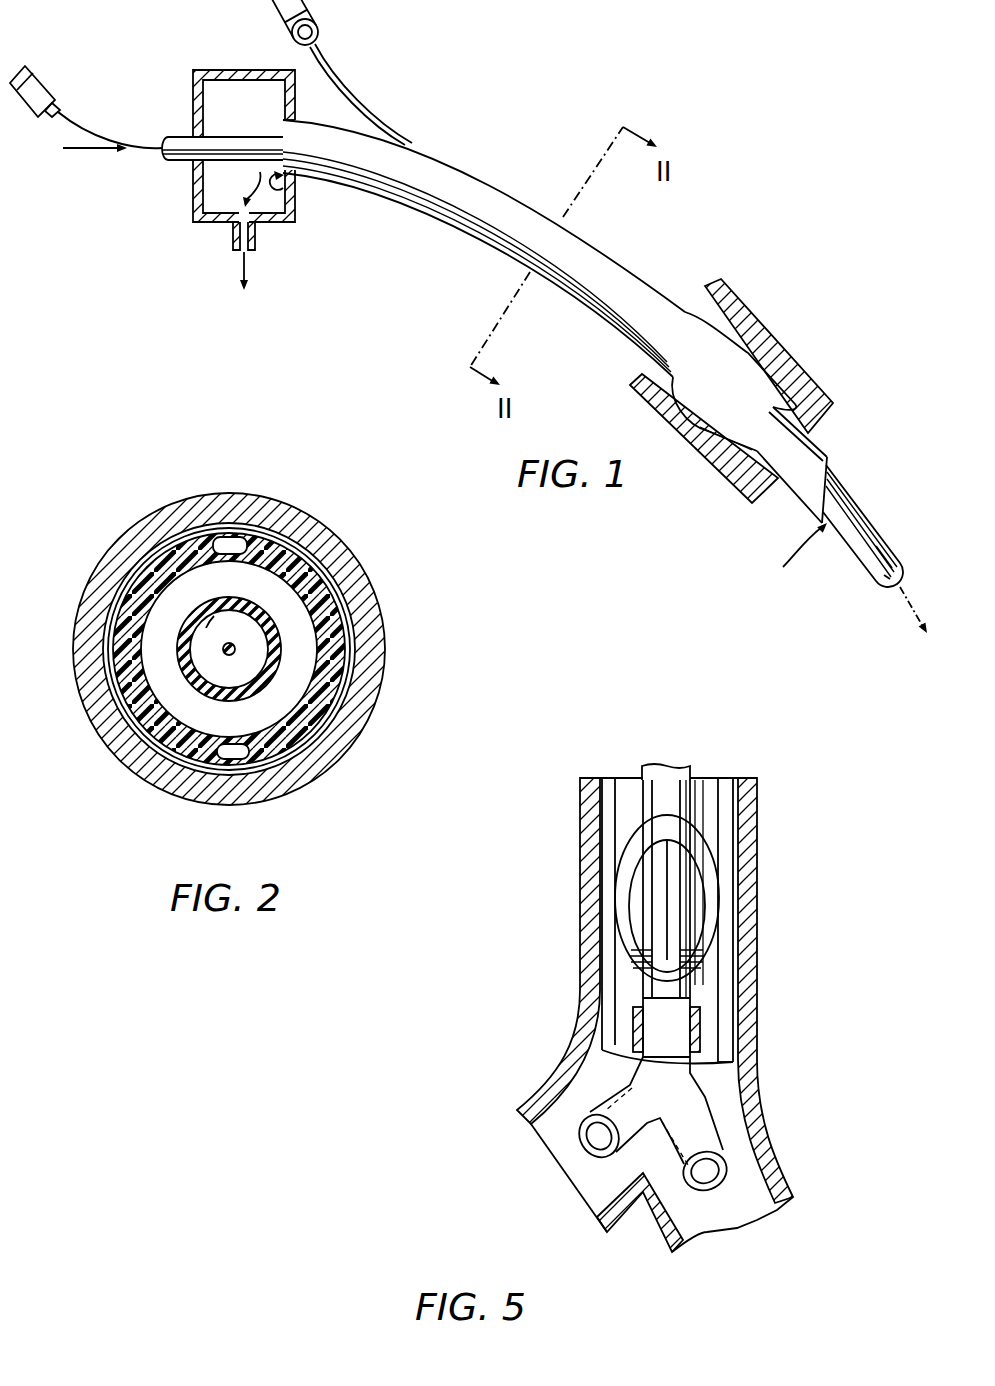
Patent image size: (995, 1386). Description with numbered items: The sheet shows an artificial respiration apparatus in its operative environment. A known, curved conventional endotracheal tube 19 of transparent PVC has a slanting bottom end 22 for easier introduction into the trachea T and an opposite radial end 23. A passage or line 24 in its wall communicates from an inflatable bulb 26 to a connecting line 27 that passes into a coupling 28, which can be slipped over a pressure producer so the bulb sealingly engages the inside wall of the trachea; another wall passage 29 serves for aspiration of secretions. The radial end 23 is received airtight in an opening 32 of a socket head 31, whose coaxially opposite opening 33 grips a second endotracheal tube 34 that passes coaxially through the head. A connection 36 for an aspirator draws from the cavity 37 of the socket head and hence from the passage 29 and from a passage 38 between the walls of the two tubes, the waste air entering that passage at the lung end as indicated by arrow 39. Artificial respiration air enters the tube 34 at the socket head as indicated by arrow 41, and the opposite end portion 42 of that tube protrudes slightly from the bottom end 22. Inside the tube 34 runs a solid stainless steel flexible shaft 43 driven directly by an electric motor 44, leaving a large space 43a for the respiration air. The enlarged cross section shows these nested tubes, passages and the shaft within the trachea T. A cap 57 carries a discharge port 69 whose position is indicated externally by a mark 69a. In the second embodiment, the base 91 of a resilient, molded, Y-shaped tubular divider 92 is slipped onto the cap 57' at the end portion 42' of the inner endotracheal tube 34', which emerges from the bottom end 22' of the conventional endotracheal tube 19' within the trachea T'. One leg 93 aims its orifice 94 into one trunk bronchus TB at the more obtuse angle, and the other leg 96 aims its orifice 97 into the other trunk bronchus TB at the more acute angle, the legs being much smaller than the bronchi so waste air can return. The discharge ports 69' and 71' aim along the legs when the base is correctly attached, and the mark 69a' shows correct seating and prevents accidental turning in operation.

In FIG. 1, the conventional endotracheal tube 19 is at (555, 317).
In FIG. 2, the conventional endotracheal tube 19 is at (253, 636).
In FIG. 1, the slanting bottom end 22 is at (863, 525).
In FIG. 1, the radial end 23 is at (280, 125).
In FIG. 2, the passage or line 24 is at (222, 538).
In FIG. 1, the inflatable bulb 26 is at (693, 380).
In FIG. 2, the inflatable bulb 26 is at (350, 647).
In FIG. 1, the connecting line 27 is at (342, 92).
In FIG. 1, the coupling 28 is at (313, 18).
In FIG. 1, the passage or line 29 is at (285, 195).
In FIG. 2, the passage or line 29 is at (217, 759).
In FIG. 1, the socket head 31 is at (238, 70).
In FIG. 1, the opening 32 is at (293, 124).
In FIG. 1, the opening 33 is at (193, 167).
In FIG. 1, the endotracheal tube 34 is at (216, 122).
In FIG. 2, the endotracheal tube 34 is at (249, 649).
In FIG. 1, the connection 36 is at (256, 242).
In FIG. 1, the cavity 37 is at (225, 202).
In FIG. 2, the passage 38 is at (171, 596).
In FIG. 1, the arrow 39 is at (838, 468).
In FIG. 1, the arrow 41 is at (80, 152).
In FIG. 1, the end portion 42 is at (895, 535).
In FIG. 1, the flexible shaft 43 is at (77, 126).
In FIG. 2, the flexible shaft 43 is at (224, 650).
In FIG. 2, the space 43a is at (206, 630).
In FIG. 1, the electric motor 44 is at (40, 82).
In FIG. 1, the cap 57 is at (912, 554).
In FIG. 1, the discharge port 69 is at (887, 622).
In FIG. 1, the mark 69a is at (498, 385).
In FIG. 1, the trachea T is at (731, 391).
In FIG. 2, the trachea T is at (229, 631).
In FIG. 5, the endotracheal tube 34' is at (641, 888).
In FIG. 5, the conventional endotracheal tube 19' is at (679, 897).
In FIG. 5, the mark 69a' is at (667, 883).
In FIG. 5, the trachea T' is at (655, 990).
In FIG. 5, the slanting bottom end 22' is at (749, 889).
In FIG. 5, the end portion 42' is at (730, 889).
In FIG. 5, the base 91 is at (700, 1017).
In FIG. 5, the cap 57' is at (608, 1012).
In FIG. 5, the discharge port 69' is at (606, 1044).
In FIG. 5, the discharge port 71' is at (763, 1043).
In FIG. 5, the Y-shaped tubular divider 92 is at (700, 1135).
In FIG. 5, the leg 93 is at (607, 1108).
In FIG. 5, the orifice 94 is at (593, 1138).
In FIG. 5, the leg 96 is at (707, 1130).
In FIG. 5, the orifice 97 is at (707, 1172).
In FIG. 5, the trunk bronchus TB is at (587, 1183).